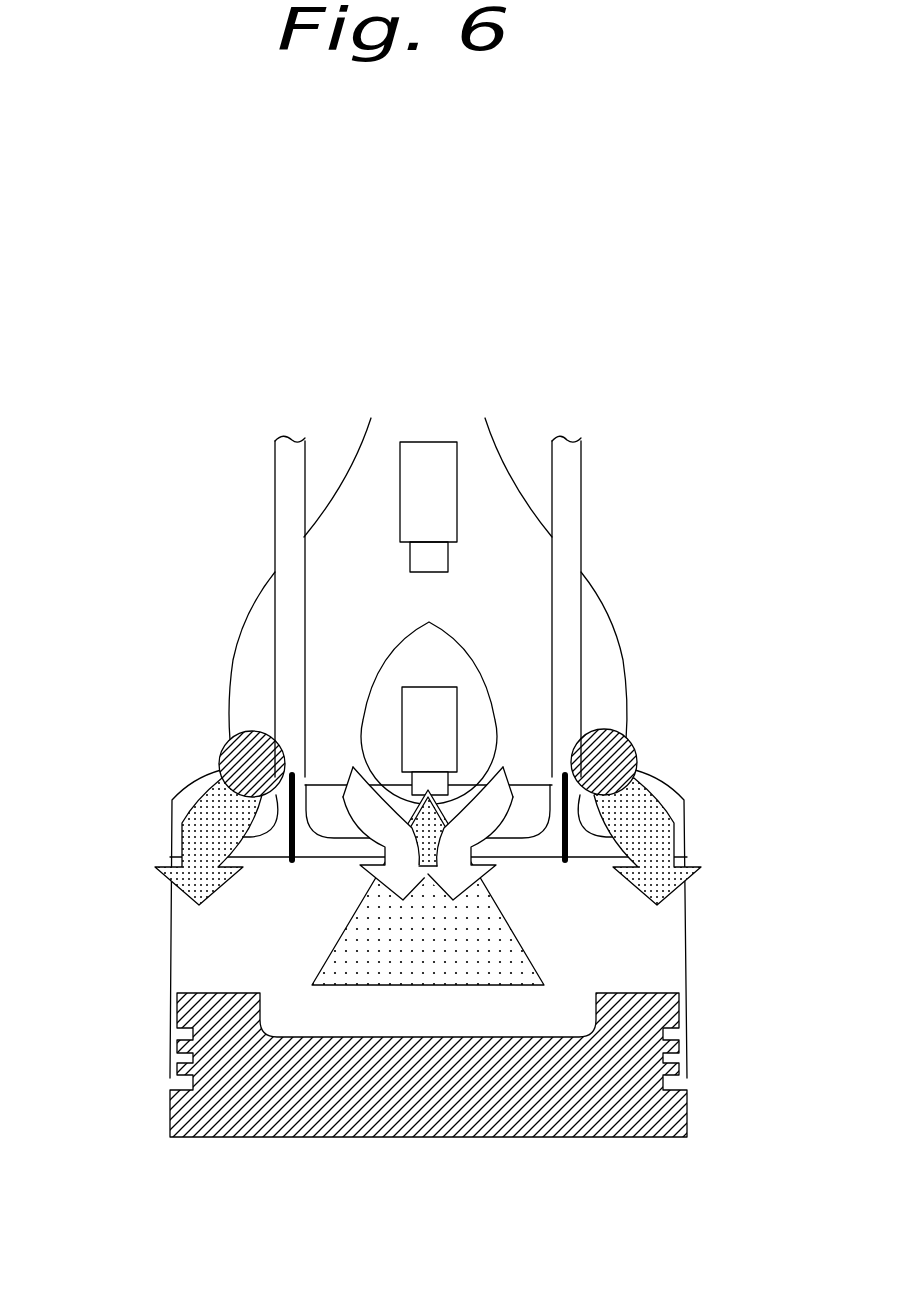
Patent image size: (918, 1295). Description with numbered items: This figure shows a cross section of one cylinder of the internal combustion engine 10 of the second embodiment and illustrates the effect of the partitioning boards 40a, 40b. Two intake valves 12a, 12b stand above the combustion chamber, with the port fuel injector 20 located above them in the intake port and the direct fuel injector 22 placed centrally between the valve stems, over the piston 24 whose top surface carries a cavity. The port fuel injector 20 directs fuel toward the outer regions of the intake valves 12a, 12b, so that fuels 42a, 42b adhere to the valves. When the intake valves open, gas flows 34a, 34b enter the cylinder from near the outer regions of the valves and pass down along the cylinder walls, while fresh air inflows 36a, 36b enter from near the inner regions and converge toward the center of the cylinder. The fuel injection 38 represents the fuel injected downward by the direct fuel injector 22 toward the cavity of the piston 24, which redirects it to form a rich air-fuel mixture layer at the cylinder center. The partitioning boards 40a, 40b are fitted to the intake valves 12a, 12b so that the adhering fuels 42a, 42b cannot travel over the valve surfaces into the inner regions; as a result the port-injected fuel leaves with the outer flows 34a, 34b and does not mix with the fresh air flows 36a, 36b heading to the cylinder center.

The internal combustion engine 10 is at (688, 985).
The intake valve 12a is at (290, 505).
The intake valve 12b is at (566, 505).
The port fuel injector 20 is at (418, 458).
The direct fuel injector 22 is at (428, 686).
The piston 24 is at (214, 1111).
The gas flow arrow 34a is at (173, 890).
The gas flow arrow 34b is at (683, 886).
The fresh air inflow arrow 36a is at (362, 871).
The fresh air inflow arrow 36b is at (494, 871).
The fuel injection 38 is at (538, 976).
The partitioning board 40a is at (291, 862).
The partitioning board 40b is at (566, 862).
The adhering fuel 42a is at (240, 733).
The adhering fuel 42b is at (628, 740).